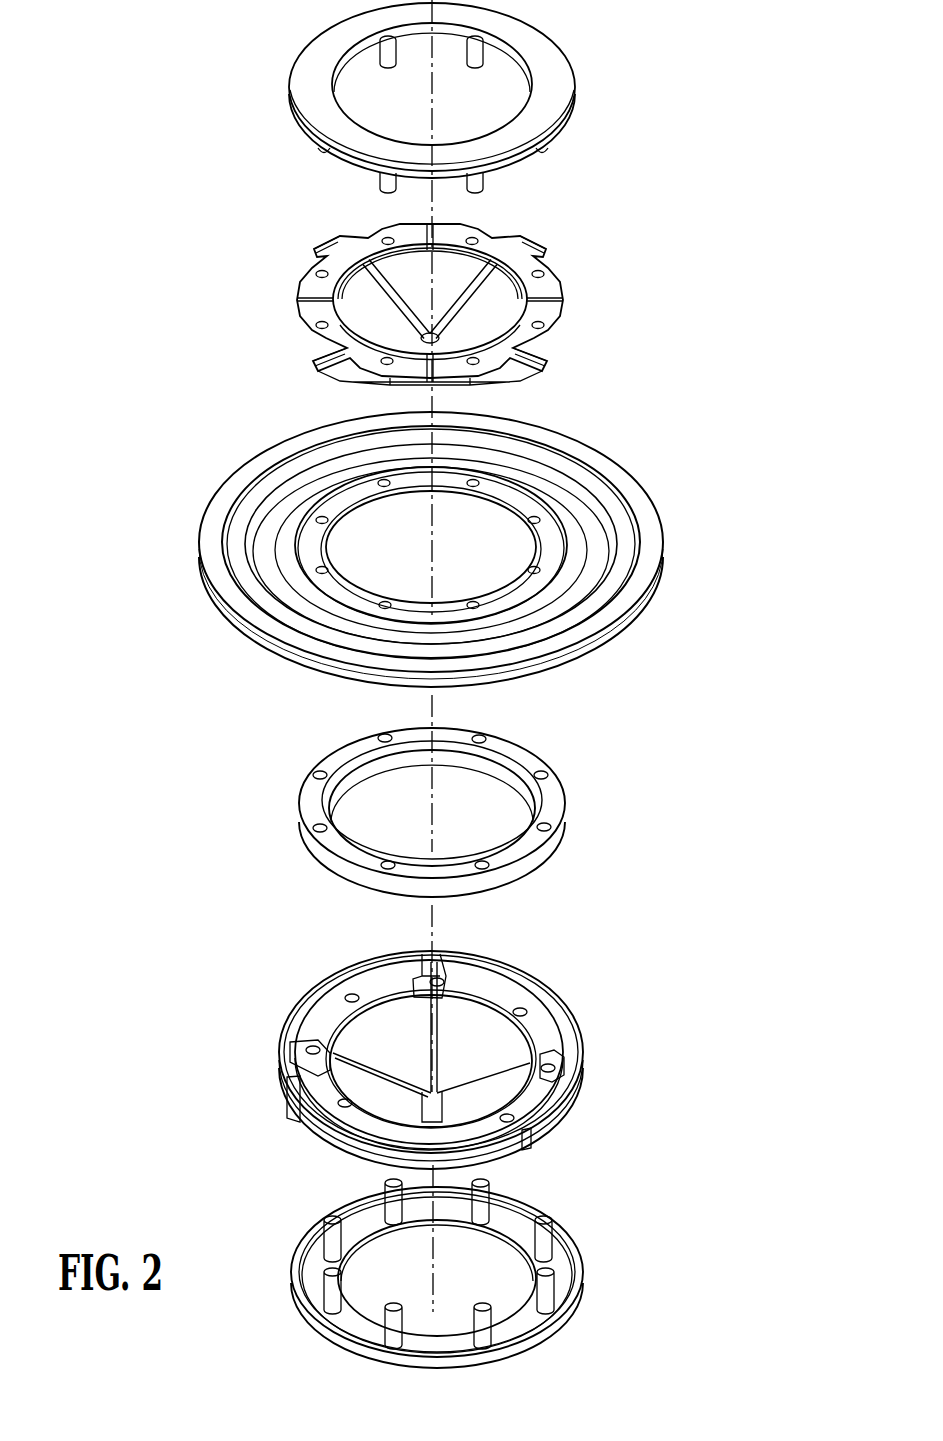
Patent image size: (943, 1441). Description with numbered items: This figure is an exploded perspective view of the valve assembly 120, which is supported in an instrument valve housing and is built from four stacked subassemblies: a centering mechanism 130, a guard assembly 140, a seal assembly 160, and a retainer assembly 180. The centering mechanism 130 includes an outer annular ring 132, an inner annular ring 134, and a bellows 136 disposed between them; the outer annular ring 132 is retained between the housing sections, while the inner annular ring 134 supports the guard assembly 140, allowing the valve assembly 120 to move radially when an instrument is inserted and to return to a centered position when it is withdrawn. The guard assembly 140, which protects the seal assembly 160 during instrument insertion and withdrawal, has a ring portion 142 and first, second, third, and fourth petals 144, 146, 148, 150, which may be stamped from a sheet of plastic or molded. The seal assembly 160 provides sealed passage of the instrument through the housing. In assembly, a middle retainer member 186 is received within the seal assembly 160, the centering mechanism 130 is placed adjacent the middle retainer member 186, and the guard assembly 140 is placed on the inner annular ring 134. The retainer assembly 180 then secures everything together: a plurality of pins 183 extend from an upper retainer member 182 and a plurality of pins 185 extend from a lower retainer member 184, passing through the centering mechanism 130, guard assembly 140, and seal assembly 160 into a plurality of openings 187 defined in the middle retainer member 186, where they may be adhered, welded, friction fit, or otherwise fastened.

The valve assembly 120 is at (697, 107).
The centering mechanism 130 is at (694, 479).
The outer annular ring 132 is at (640, 568).
The inner annular ring 134 is at (550, 542).
The bellows 136 is at (602, 490).
The guard assembly 140 is at (586, 269).
The ring portion 142 is at (390, 387).
The first petal 144 is at (518, 243).
The second petal 146 is at (541, 337).
The third petal 148 is at (338, 336).
The fourth petal 150 is at (336, 263).
The seal assembly 160 is at (598, 1012).
The retainer assembly 180 is at (272, 100).
The upper retainer member 182 is at (578, 62).
The pins 183 is at (476, 56).
The lower retainer member 184 is at (596, 1245).
The pins 185 is at (482, 1190).
The middle retainer member 186 is at (577, 785).
The openings 187 is at (547, 773).